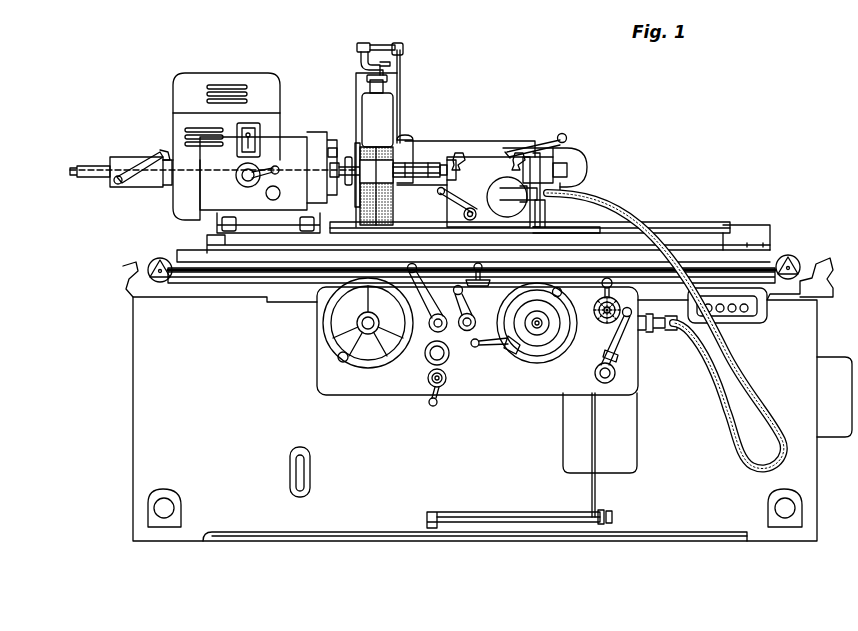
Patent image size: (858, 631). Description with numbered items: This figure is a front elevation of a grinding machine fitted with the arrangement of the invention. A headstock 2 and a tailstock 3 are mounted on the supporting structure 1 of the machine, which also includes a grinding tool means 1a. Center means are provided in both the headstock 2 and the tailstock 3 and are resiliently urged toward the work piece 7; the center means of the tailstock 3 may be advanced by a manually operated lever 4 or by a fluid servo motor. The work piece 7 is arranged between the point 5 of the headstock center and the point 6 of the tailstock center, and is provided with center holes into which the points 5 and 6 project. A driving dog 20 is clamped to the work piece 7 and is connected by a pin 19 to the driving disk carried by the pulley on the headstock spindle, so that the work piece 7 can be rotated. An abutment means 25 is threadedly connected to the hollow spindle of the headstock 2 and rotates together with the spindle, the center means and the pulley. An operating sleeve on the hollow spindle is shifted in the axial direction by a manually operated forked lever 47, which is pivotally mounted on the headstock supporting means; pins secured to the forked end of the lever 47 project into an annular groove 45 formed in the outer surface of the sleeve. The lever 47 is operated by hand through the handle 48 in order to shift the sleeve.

The supporting structure 1 is at (728, 240).
The grinding tool means 1a is at (386, 115).
The headstock 2 is at (292, 143).
The tailstock 3 is at (488, 165).
The manually operated lever 4 is at (562, 134).
The point of the center 5 is at (337, 176).
The point of the center 6 is at (441, 163).
The work piece 7 is at (410, 162).
The pin 19 is at (336, 148).
The driving dog 20 is at (358, 150).
The abutment means 25 is at (346, 183).
The annular groove 45 is at (167, 187).
The forked lever 47 is at (150, 155).
The handle 48 is at (117, 187).